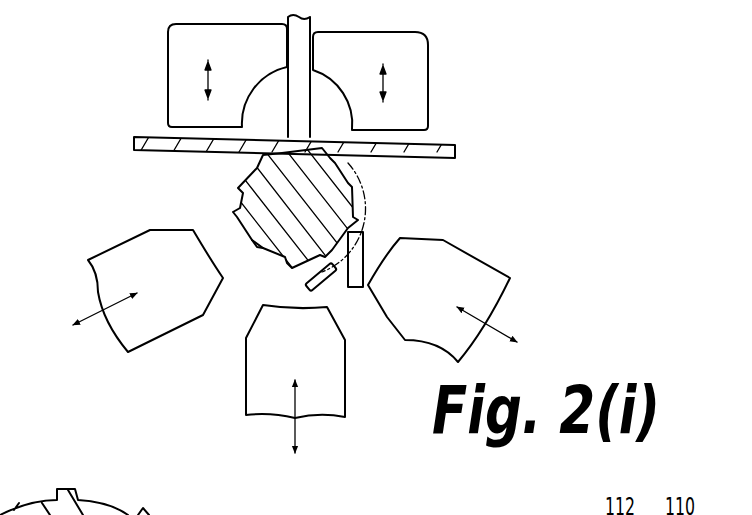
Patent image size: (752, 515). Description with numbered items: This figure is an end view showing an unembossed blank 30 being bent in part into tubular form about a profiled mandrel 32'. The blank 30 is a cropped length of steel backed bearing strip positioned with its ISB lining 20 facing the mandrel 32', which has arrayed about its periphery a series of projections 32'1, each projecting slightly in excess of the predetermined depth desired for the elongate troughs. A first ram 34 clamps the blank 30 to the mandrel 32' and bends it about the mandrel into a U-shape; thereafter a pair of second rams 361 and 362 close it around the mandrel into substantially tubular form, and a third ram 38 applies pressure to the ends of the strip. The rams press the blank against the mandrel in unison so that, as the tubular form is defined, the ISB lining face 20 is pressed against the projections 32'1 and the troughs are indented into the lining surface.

The ISB lining 20 is at (441, 159).
The blank 30 is at (440, 140).
The mandrel 32' is at (284, 219).
The projections 32'1 is at (252, 268).
The first ram 34 is at (436, 53).
The second ram 361 is at (470, 263).
The second ram 362 is at (125, 257).
The third ram 38 is at (320, 368).